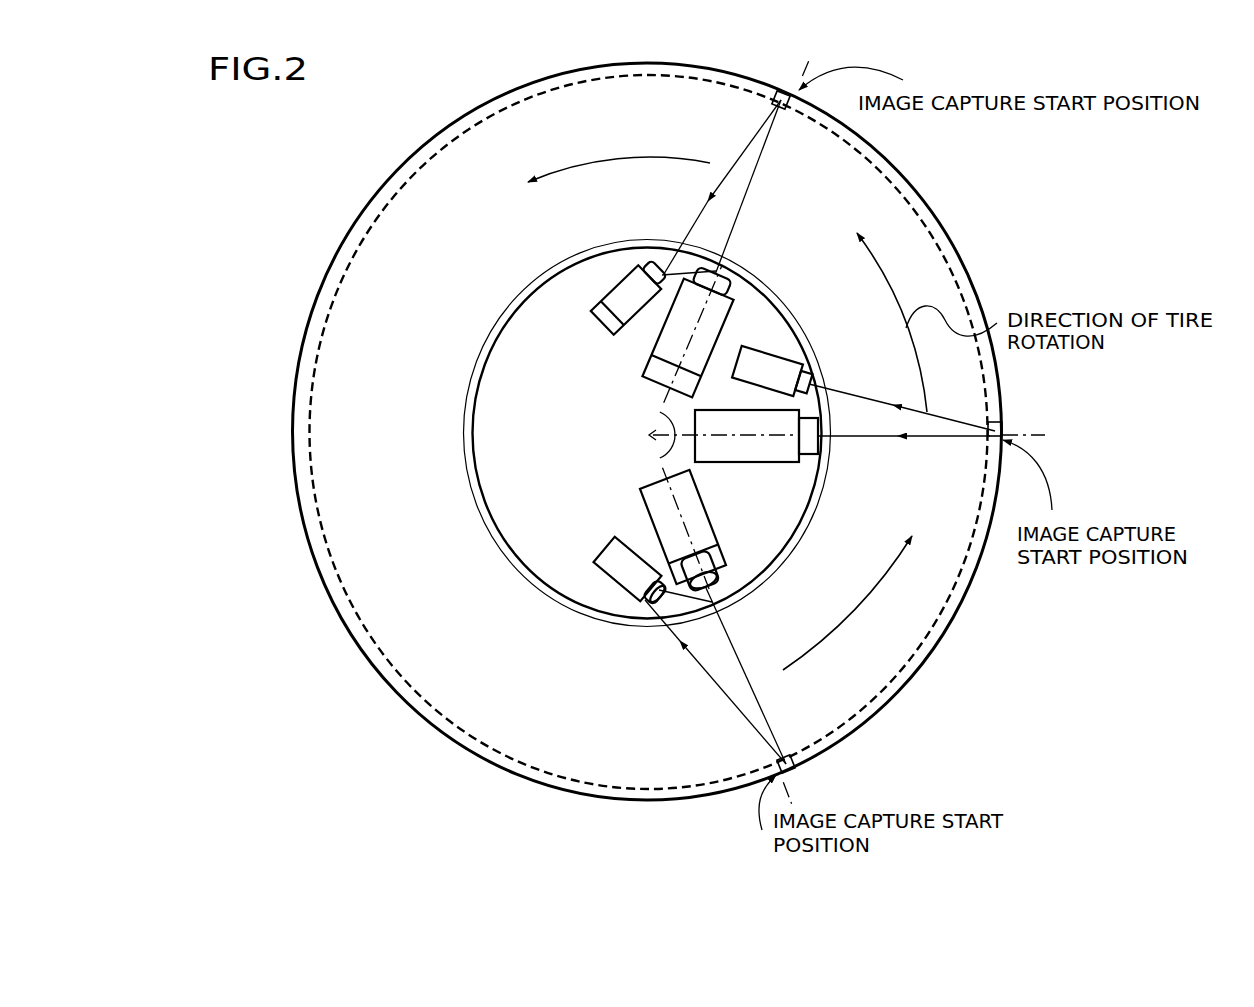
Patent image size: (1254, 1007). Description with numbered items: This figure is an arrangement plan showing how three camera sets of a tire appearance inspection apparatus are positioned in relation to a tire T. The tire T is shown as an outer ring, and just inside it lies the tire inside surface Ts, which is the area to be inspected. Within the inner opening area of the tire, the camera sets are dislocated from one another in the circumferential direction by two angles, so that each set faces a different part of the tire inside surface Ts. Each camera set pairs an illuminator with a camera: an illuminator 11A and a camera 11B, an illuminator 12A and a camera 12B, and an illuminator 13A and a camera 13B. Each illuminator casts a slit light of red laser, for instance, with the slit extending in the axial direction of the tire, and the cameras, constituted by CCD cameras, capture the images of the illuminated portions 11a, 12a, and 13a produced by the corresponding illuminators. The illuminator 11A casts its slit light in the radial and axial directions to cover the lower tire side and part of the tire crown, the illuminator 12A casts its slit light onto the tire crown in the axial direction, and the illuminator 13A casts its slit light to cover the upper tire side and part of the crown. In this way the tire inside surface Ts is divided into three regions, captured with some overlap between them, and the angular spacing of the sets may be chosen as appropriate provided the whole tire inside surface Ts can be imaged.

The tire T is at (292, 389).
The tire inside surface Ts is at (441, 167).
The illuminator 11A is at (628, 292).
The camera 11B is at (713, 323).
The illuminated portion 11a is at (742, 217).
The illuminator 12A is at (772, 368).
The camera 12B is at (795, 458).
The illuminated portion 12a is at (867, 403).
The illuminator 13A is at (603, 548).
The camera 13B is at (702, 488).
The illuminated portion 13a is at (706, 668).